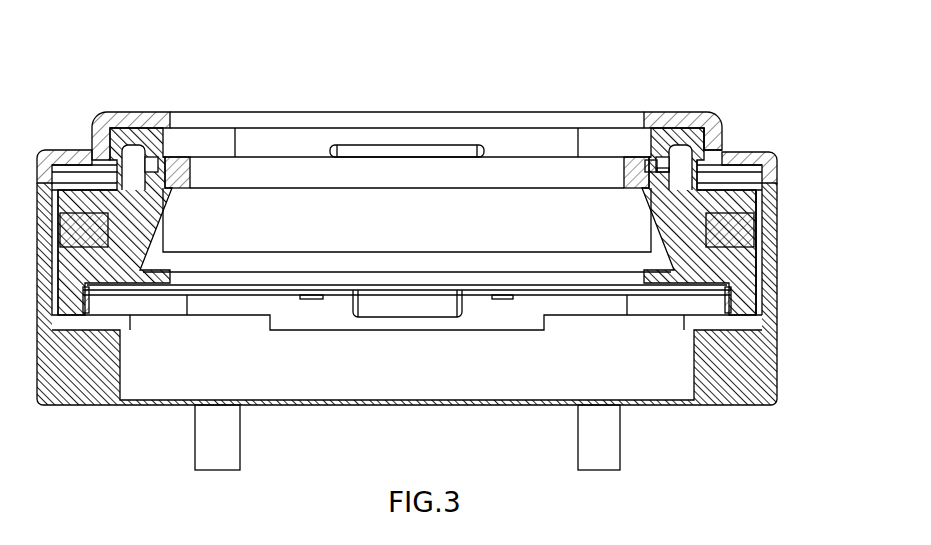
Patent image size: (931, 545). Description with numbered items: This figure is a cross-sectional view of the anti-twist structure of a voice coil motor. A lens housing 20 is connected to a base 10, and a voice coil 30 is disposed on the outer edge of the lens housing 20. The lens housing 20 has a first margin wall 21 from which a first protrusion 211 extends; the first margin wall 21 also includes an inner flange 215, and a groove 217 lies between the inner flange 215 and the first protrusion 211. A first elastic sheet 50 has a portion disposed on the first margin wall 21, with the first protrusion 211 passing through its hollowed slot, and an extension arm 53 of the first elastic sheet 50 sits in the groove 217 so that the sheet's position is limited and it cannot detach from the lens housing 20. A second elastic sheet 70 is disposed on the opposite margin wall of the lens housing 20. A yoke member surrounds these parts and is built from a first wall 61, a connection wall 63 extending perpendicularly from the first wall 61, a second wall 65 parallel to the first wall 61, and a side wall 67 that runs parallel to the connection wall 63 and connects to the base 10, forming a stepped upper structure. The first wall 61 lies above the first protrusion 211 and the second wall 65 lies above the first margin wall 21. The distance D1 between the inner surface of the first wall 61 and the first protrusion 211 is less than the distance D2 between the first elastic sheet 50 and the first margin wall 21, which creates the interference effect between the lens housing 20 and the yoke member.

The base 10 is at (753, 380).
The lens housing 20 is at (743, 282).
The first margin wall 21 is at (750, 182).
The first protrusion 211 is at (652, 166).
The inner flange 215 is at (178, 176).
The groove 217 is at (153, 150).
The voice coil 30 is at (743, 238).
The first elastic sheet 50 is at (742, 198).
The extension arm 53 is at (664, 166).
The first wall 61 is at (698, 117).
The connection wall 63 is at (735, 148).
The second wall 65 is at (762, 160).
The side wall 67 is at (745, 345).
The second elastic sheet 70 is at (732, 306).
The distance D1 is at (130, 160).
The distance D2 is at (75, 208).